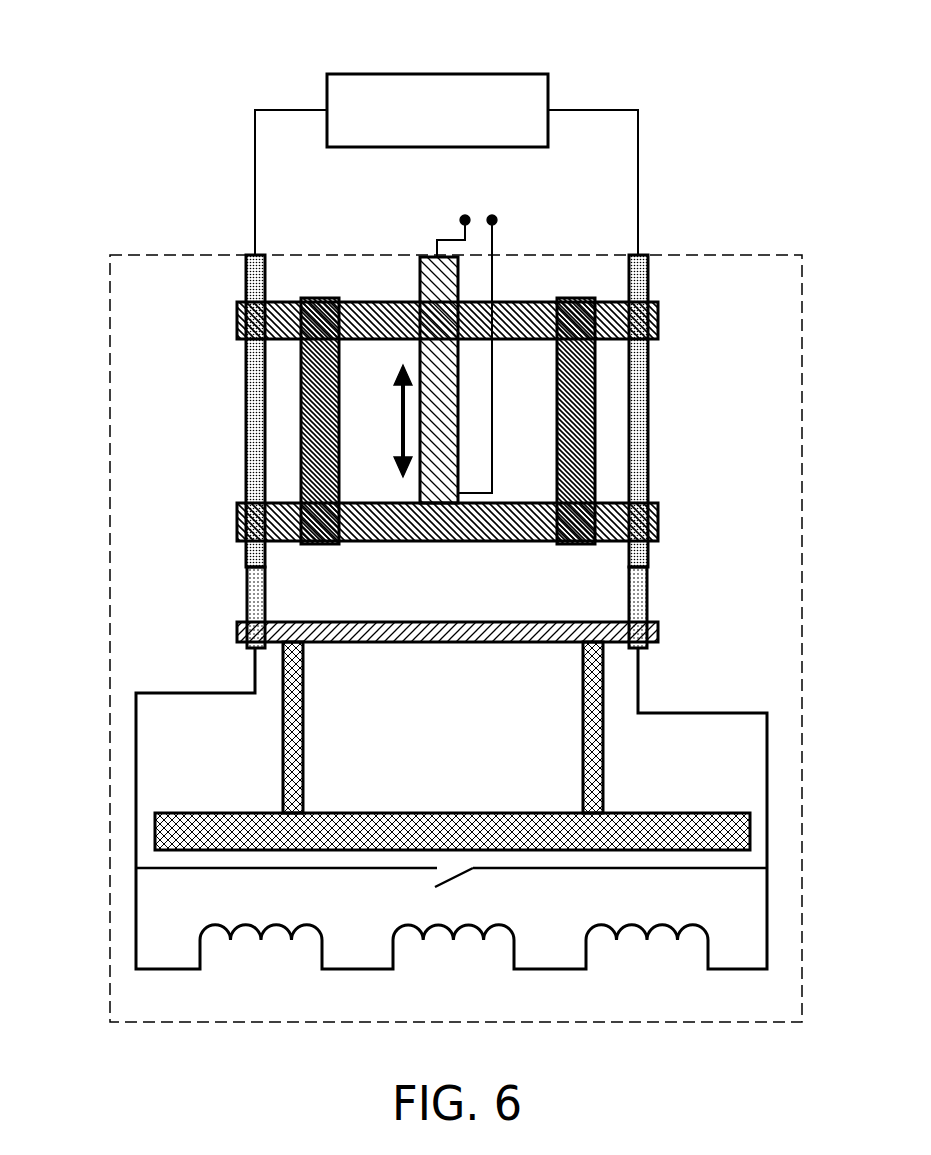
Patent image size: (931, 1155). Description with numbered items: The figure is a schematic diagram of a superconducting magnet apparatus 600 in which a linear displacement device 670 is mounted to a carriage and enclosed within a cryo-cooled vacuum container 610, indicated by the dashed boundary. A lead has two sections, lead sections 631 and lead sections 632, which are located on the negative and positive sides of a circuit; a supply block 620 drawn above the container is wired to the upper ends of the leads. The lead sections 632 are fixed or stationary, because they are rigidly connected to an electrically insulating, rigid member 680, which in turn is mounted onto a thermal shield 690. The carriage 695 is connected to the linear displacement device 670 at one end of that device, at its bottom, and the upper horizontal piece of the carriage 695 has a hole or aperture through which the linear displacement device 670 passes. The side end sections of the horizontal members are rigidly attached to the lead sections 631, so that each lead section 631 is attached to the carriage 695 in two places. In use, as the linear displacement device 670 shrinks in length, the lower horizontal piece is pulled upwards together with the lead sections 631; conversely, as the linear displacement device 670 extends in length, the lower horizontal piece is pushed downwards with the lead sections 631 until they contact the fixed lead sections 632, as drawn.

The superconducting magnet apparatus 600 is at (176, 57).
The vacuum container 610 is at (791, 637).
The power supply 620 is at (459, 123).
The lead section 631 is at (246, 360).
The lead section 632 is at (247, 605).
The linear displacement device 670 is at (419, 256).
The electrically insulating rigid member 680 is at (529, 622).
The thermal shield 690 is at (303, 768).
The carriage 695 is at (247, 520).